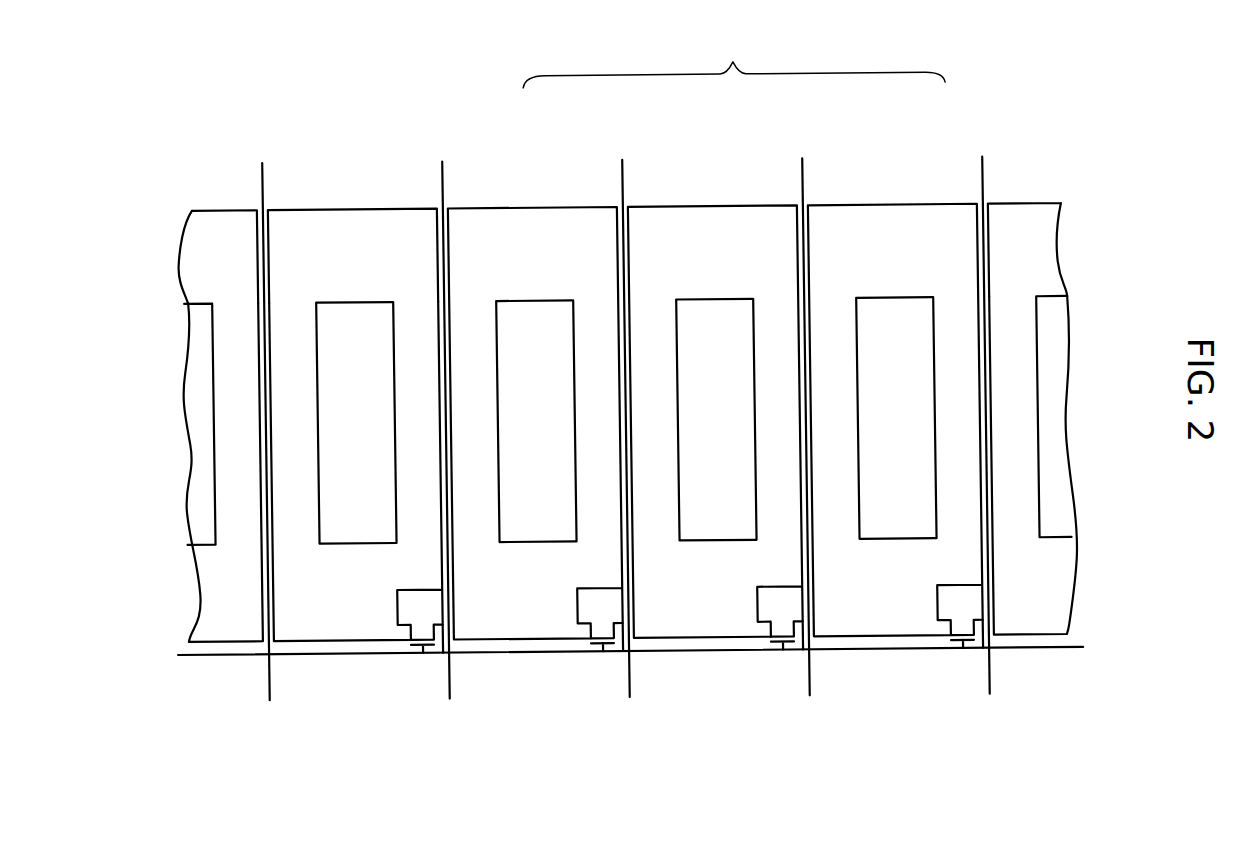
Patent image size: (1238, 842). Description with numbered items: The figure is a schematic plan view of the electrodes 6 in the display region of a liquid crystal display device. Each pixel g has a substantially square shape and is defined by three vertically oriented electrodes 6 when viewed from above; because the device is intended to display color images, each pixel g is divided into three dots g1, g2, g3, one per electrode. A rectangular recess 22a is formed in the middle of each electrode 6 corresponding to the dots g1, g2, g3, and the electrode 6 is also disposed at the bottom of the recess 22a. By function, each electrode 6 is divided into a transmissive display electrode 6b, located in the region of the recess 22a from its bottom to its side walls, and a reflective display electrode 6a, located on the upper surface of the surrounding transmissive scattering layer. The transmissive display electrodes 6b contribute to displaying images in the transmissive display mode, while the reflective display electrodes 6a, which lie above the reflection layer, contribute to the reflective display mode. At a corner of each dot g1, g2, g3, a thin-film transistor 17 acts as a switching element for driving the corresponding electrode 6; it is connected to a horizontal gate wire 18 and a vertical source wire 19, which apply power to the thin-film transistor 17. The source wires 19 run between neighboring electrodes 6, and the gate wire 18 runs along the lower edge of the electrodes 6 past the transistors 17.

The electrode 6 is at (1031, 205).
The reflective display electrode 6a is at (309, 270).
The transmissive display electrode 6b is at (336, 459).
The rectangular recess 22a is at (318, 394).
The thin-film transistor 17 is at (392, 656).
The gate wire 18 is at (902, 658).
The source wire 19 is at (625, 680).
The pixel g is at (733, 57).
The dot g1 is at (529, 203).
The dot g2 is at (709, 205).
The dot g3 is at (888, 206).